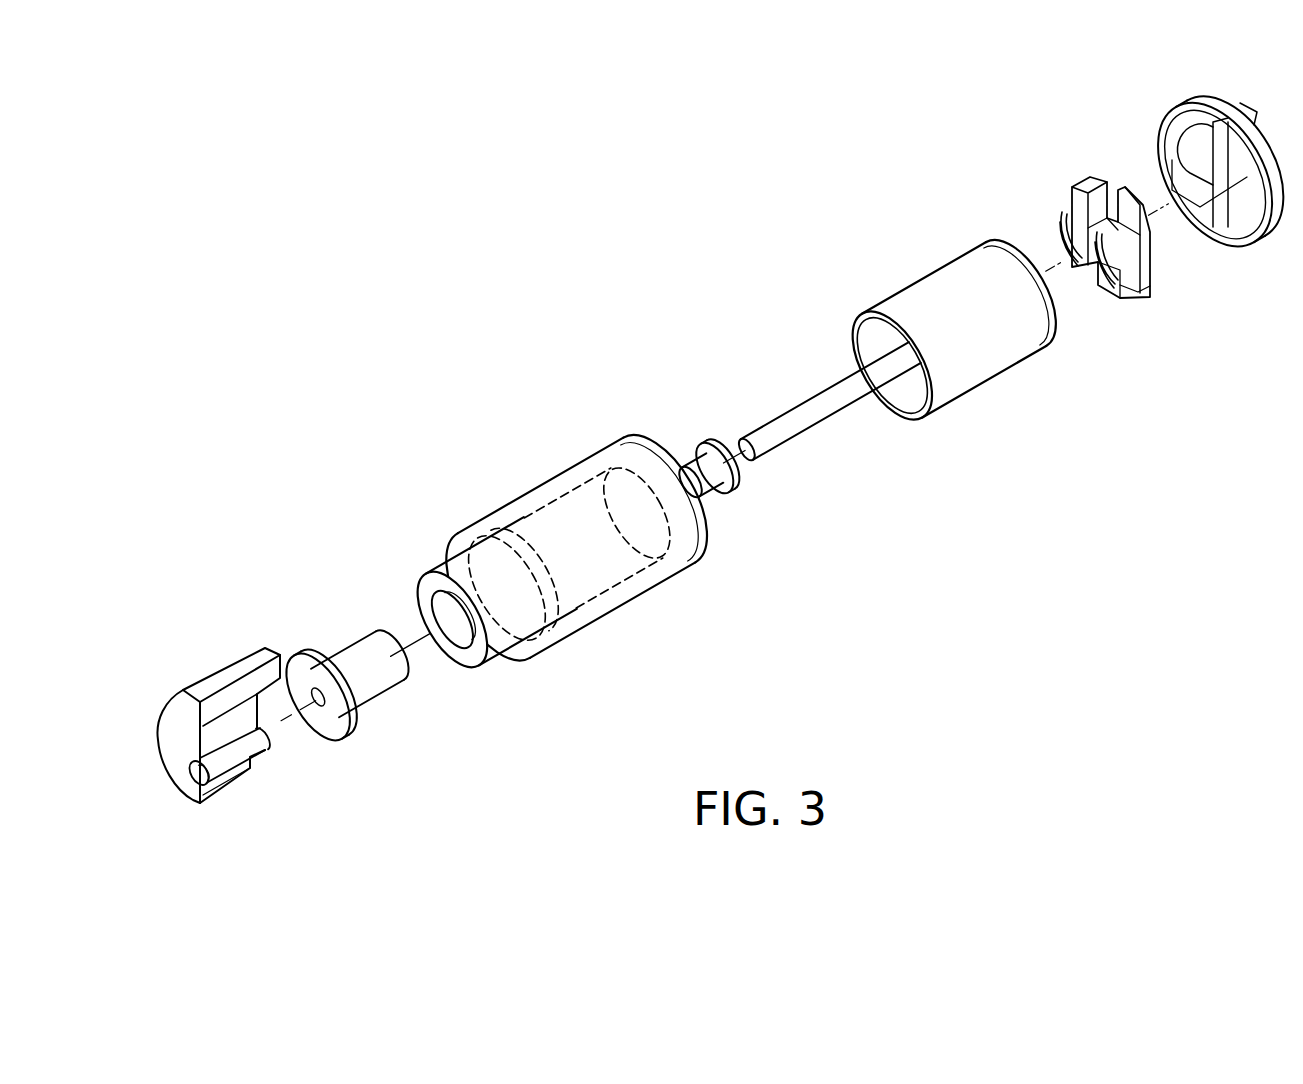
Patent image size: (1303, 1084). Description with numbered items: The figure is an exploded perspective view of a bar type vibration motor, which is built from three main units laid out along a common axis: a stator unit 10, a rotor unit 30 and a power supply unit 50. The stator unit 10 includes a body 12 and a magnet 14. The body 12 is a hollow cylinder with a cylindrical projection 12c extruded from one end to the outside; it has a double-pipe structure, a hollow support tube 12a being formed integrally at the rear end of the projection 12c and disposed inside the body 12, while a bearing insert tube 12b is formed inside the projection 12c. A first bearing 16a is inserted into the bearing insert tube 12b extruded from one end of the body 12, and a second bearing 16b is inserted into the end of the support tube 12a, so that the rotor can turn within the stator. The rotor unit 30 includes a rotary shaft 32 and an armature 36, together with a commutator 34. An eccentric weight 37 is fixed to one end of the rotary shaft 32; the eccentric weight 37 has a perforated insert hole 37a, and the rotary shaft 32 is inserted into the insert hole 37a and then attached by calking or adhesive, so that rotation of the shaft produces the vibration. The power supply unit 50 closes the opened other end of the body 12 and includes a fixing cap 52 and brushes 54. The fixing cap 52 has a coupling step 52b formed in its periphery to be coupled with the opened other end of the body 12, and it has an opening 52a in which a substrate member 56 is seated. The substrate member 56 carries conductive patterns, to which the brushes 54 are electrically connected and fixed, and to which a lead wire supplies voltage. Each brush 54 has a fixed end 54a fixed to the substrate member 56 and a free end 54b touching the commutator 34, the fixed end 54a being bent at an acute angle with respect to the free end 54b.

The stator unit 10 is at (534, 579).
The body 12 is at (622, 607).
The support tube 12a is at (517, 613).
The bearing insert tube 12b is at (452, 637).
The projection 12c is at (425, 600).
The magnet 14 is at (552, 517).
The first bearing 16a is at (318, 723).
The second bearing 16b is at (713, 490).
The rotor unit 30 is at (923, 361).
The rotary shaft 32 is at (785, 443).
The commutator 34 is at (1055, 315).
The armature 36 is at (947, 397).
The eccentric weight 37 is at (218, 741).
The insert hole 37a is at (198, 773).
The power supply unit 50 is at (1143, 204).
The fixing cap 52 is at (1170, 170).
The opening 52a is at (1180, 170).
The coupling step 52b is at (1228, 140).
The brush 54 is at (1060, 222).
The fixed end 54a is at (1123, 235).
The free end 54b is at (1137, 290).
The substrate member 56 is at (1087, 178).